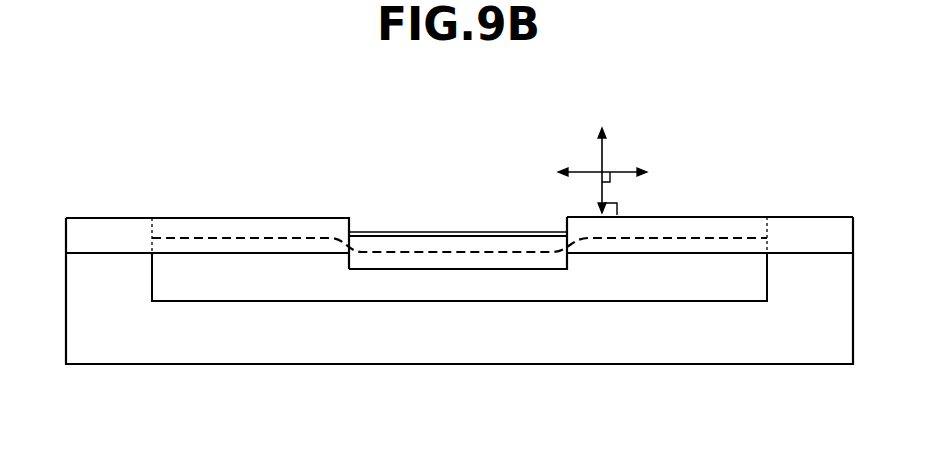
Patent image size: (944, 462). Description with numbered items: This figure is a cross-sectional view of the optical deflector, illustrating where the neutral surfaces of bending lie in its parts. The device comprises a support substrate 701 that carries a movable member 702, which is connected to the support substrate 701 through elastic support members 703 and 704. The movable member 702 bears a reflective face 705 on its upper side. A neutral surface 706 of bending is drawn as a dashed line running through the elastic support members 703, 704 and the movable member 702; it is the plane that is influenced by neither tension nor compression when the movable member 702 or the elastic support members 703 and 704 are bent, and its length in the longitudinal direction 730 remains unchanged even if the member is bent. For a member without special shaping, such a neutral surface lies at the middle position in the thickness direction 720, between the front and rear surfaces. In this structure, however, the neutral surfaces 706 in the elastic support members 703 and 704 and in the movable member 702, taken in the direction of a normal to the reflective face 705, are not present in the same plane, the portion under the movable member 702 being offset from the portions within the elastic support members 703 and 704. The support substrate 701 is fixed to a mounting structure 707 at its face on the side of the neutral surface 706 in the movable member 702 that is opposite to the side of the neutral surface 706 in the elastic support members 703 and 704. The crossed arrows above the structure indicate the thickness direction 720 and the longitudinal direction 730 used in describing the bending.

The support substrate 701 is at (102, 218).
The movable member 702 is at (430, 270).
The elastic support member 703 is at (222, 254).
The elastic support member 704 is at (660, 254).
The reflective face 705 is at (458, 230).
The neutral surface 706 is at (281, 238).
The mounting structure 707 is at (737, 335).
The thickness direction 720 is at (603, 145).
The longitudinal direction 730 is at (590, 170).